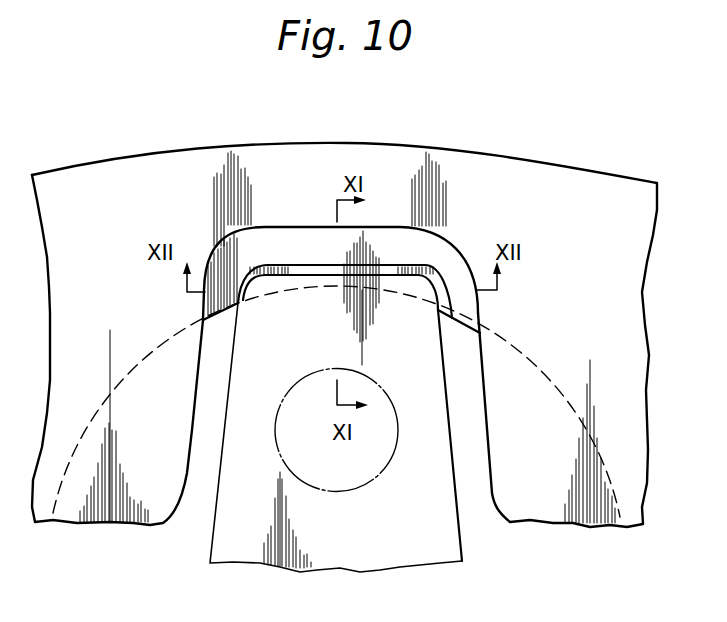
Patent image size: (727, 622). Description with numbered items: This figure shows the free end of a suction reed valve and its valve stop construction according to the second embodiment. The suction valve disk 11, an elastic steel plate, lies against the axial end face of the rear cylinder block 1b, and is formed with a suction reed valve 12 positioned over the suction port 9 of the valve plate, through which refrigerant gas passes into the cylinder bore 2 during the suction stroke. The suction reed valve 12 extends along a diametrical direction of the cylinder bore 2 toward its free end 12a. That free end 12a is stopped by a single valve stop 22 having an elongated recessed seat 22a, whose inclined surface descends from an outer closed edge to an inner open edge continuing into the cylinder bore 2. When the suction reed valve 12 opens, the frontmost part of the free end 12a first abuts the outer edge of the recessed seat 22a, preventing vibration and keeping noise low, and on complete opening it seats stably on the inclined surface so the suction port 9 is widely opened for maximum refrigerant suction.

The suction valve disk 11 is at (462, 163).
The rear cylinder block 1b is at (443, 247).
The valve stop 22 is at (280, 268).
The free end 12a is at (380, 277).
The elongated recessed seat 22a is at (238, 306).
The suction reed valve 12 is at (442, 406).
The cylinder bore 2 is at (129, 384).
The suction port 9 is at (328, 492).